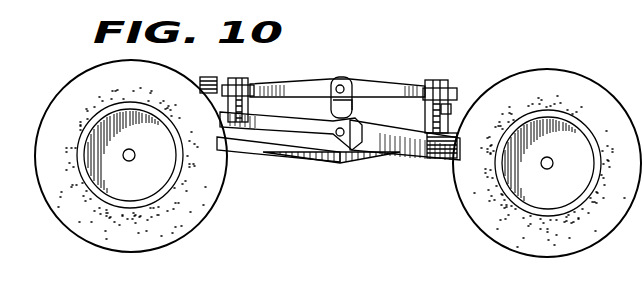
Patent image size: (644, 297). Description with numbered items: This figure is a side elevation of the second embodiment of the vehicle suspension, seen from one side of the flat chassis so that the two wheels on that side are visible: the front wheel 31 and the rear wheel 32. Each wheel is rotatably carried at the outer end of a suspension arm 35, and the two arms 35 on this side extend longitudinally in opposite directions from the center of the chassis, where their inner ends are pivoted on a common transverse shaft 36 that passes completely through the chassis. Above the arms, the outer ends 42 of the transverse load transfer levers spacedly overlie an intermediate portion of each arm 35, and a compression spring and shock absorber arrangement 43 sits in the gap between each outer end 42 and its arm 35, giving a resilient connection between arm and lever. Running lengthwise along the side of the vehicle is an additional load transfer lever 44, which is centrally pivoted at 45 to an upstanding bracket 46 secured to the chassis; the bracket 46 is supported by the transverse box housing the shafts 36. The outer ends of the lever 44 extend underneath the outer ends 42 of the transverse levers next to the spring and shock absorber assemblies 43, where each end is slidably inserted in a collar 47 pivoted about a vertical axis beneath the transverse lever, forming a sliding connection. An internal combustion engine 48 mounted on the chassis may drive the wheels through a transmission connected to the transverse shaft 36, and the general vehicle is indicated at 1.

The frame 1 is at (358, 157).
The front wheel 31 is at (65, 193).
The rear wheel 32 is at (472, 187).
The suspension arm 35 is at (272, 157).
The transverse shaft 36 is at (335, 155).
The outer end of load transfer lever 42 is at (437, 78).
The compression spring and shock absorber arrangement 43 is at (450, 130).
The additional load transfer lever 44 is at (305, 82).
The pivot 45 is at (342, 86).
The upstanding bracket 46 is at (352, 100).
The collar 47 is at (447, 110).
The internal combustion engine 48 is at (222, 72).